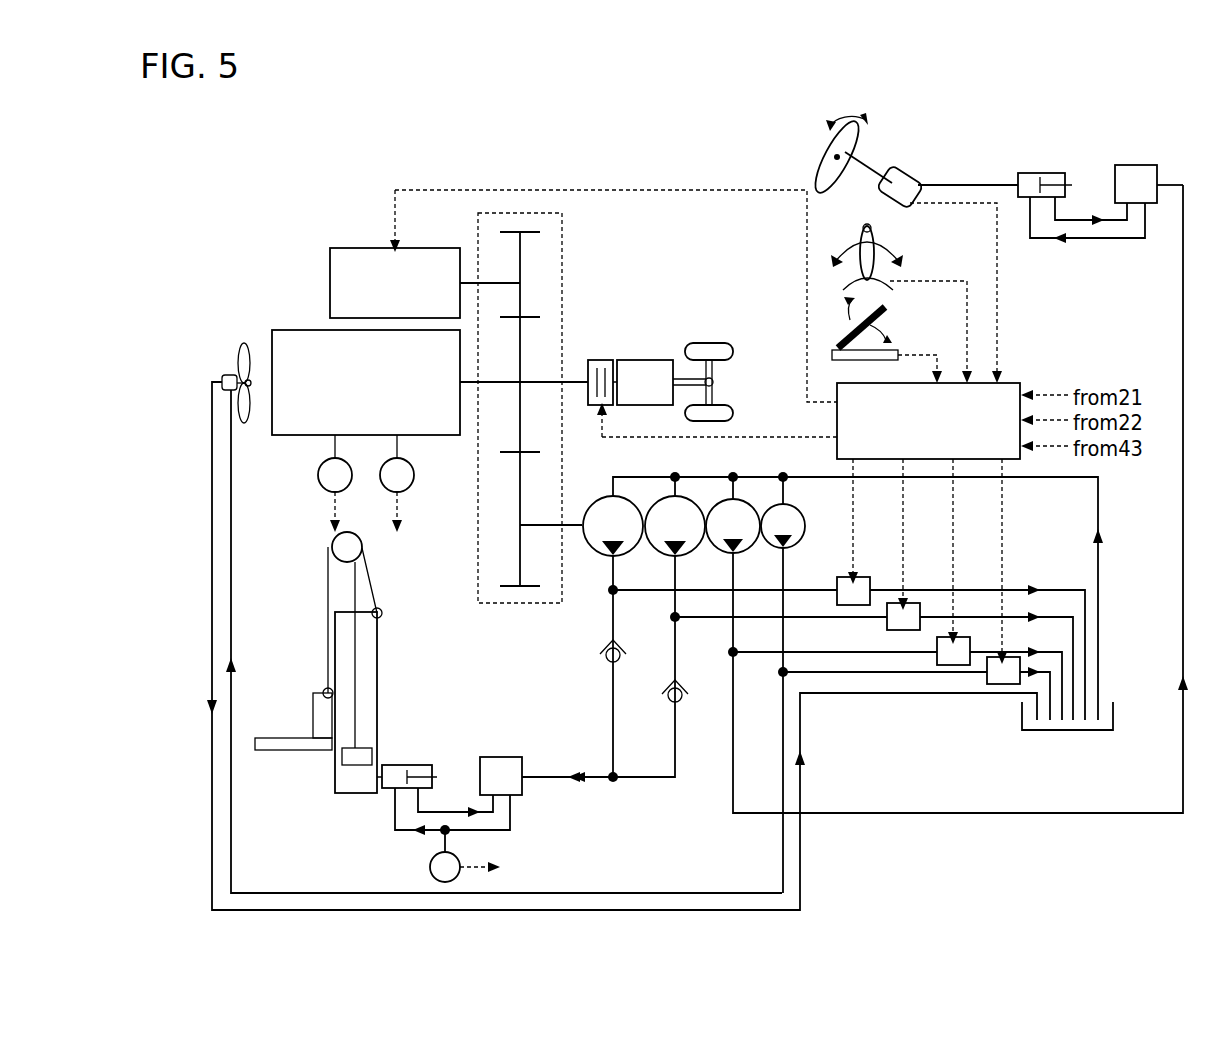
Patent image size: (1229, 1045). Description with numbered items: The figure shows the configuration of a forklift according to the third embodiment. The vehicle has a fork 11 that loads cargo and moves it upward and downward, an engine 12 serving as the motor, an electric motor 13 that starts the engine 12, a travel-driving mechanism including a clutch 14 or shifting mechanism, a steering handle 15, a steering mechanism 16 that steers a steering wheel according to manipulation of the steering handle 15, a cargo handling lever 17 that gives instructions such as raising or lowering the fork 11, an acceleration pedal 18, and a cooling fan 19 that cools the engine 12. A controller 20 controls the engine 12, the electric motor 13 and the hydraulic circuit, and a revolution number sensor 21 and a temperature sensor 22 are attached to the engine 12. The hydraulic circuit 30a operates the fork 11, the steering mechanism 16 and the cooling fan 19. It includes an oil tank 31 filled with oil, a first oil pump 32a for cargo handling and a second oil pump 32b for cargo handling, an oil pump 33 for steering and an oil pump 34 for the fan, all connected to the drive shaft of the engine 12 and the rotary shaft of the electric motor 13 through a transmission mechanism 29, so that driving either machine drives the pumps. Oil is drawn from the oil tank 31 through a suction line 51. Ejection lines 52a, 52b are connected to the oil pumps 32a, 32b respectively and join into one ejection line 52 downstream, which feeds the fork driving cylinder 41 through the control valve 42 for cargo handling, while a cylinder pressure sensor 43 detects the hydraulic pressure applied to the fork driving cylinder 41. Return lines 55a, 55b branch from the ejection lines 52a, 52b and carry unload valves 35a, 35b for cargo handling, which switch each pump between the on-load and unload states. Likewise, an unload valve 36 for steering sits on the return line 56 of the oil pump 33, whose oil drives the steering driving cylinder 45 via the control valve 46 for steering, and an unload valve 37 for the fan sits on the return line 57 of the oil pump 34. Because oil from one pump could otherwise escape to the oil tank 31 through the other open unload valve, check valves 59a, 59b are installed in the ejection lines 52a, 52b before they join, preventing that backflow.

The fork 11 is at (290, 752).
The engine 12 is at (302, 330).
The electric motor 13 is at (346, 248).
The clutch 14 is at (600, 360).
The steering handle 15 is at (828, 152).
The steering mechanism 16 is at (905, 168).
The cargo handling lever 17 is at (872, 232).
The acceleration pedal 18 is at (890, 310).
The cooling fan 19 is at (231, 375).
The controller 20 is at (1012, 383).
The revolution number sensor 21 is at (318, 476).
The temperature sensor 22 is at (414, 476).
The transmission mechanism 29 is at (478, 590).
The hydraulic circuit 30a is at (1045, 848).
The oil tank 31 is at (1113, 712).
The first oil pump for cargo handling 32a is at (600, 497).
The second oil pump for cargo handling 32b is at (662, 497).
The oil pump for steering 33 is at (716, 503).
The oil pump for the fan 34 is at (770, 507).
The first unload valve for cargo handling 35a is at (846, 577).
The second unload valve for cargo handling 35b is at (896, 603).
The unload valve for steering 36 is at (946, 637).
The unload valve for the fan 37 is at (1000, 657).
The fork driving cylinder 41 is at (400, 765).
The control valve for cargo handling 42 is at (500, 757).
The cylinder pressure sensor 43 is at (430, 867).
The steering driving cylinder 45 is at (1035, 173).
The control valve for steering 46 is at (1130, 165).
The suction line 51 is at (1100, 590).
The ejection line 52 is at (550, 778).
The ejection line 52a is at (613, 702).
The ejection line 52b is at (640, 778).
The return line 55a is at (645, 592).
The return line 55b is at (700, 620).
The return line 56 is at (757, 654).
The return line 57 is at (893, 694).
The check valve 59a is at (601, 646).
The check valve 59b is at (683, 704).